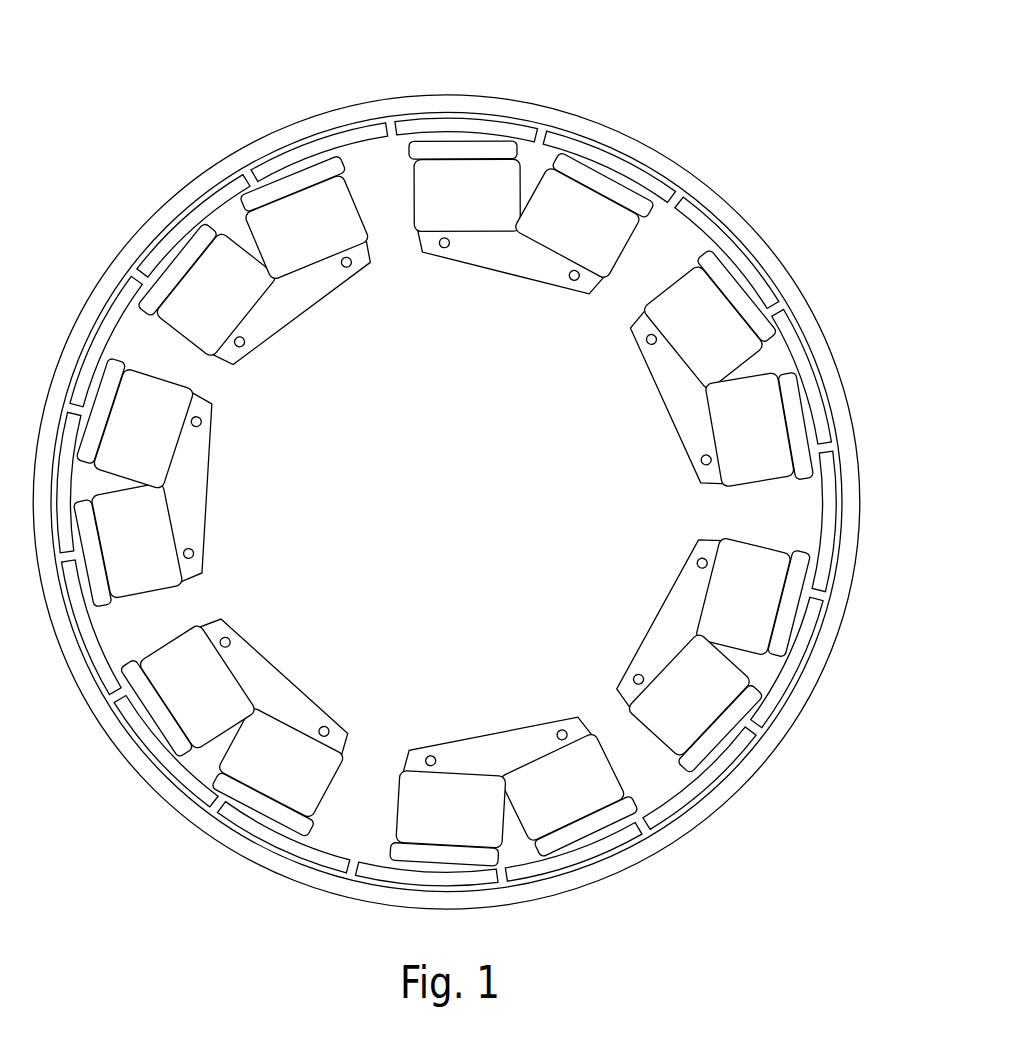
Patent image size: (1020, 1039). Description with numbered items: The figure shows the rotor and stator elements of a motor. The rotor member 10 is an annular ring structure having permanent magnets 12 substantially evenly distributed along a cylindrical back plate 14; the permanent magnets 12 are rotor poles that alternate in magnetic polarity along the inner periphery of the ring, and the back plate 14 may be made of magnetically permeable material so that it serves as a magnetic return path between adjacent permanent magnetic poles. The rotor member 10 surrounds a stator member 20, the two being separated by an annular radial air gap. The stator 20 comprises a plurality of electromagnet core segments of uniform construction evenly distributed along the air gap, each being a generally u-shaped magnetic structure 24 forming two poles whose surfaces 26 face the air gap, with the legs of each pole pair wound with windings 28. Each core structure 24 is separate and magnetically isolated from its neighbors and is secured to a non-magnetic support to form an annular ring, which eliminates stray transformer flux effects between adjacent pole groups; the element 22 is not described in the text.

The rotor member 10 is at (455, 492).
The permanent magnets 12 is at (702, 221).
The cylindrical back plate 14 is at (643, 138).
The stator member 20 is at (268, 452).
The seat 22 is at (464, 223).
The u-shaped magnetic structure 24 is at (543, 283).
The pole surfaces 26 is at (463, 150).
The windings 28 is at (467, 233).